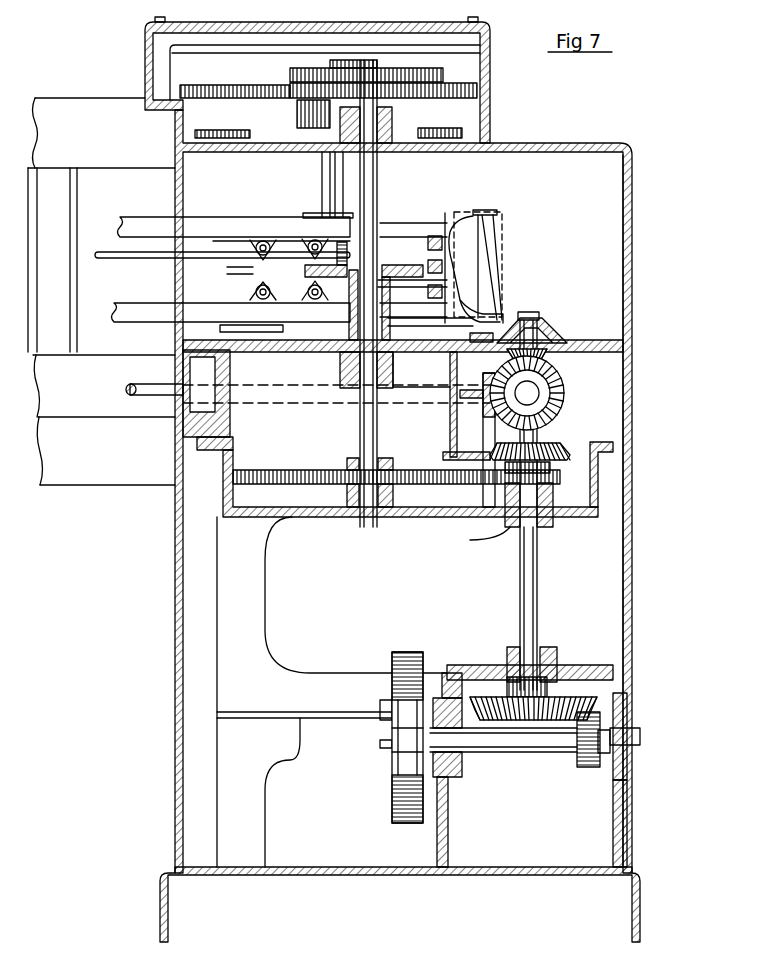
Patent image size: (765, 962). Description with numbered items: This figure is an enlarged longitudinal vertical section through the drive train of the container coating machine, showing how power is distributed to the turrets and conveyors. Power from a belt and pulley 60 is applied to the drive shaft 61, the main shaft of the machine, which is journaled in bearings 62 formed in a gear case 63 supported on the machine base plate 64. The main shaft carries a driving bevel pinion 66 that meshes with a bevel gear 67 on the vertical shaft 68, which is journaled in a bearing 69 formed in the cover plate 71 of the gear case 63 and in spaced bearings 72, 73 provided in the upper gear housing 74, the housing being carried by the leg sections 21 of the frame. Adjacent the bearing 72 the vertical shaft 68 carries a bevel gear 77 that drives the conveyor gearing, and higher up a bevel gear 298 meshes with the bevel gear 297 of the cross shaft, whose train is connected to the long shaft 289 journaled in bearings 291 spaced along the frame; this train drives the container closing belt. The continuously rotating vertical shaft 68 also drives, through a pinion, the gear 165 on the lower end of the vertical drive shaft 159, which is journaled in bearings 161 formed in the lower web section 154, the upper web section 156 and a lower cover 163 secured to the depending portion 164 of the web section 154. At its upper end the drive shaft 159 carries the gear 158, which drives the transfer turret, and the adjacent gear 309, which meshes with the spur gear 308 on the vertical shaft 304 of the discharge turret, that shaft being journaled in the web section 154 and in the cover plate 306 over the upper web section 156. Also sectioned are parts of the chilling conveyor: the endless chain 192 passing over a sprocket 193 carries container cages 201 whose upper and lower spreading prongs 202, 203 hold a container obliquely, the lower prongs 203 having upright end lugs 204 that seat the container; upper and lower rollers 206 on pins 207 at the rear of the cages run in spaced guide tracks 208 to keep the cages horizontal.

The leg sections 21 is at (202, 798).
The belt and pulley 60 is at (404, 826).
The drive shaft 61 is at (535, 742).
The bearings 62 is at (447, 764).
The gear case 63 is at (448, 818).
The machine base plate 64 is at (640, 898).
The driving bevel pinion 66 is at (589, 756).
The bevel gear 67 is at (570, 695).
The vertical shaft 68 is at (530, 579).
The bearing 69 is at (548, 652).
The cover plate 71 is at (481, 665).
The bearing 72 is at (548, 514).
The bearing 73 is at (548, 328).
The upper gear housing 74 is at (633, 366).
The bevel gear 77 is at (556, 447).
The lower web section 154 is at (281, 366).
The upper web section 156 is at (243, 150).
The gear 158 is at (440, 76).
The vertical drive shaft 159 is at (377, 185).
The bearings 161 is at (392, 118).
The lower cover 163 is at (290, 525).
The depending portion 164 is at (226, 438).
The gear 165 is at (418, 483).
The endless chain 192 is at (240, 277).
The sprocket 193 is at (410, 272).
The container cages 201 is at (255, 240).
The upper prongs 202 is at (482, 230).
The lower prongs 203 is at (283, 330).
The end lugs 204 is at (505, 320).
The rollers 206 is at (314, 240).
The pins 207 is at (262, 240).
The guide tracks 208 is at (201, 230).
The shaft 289 is at (156, 397).
The bearings 291 is at (484, 402).
The bevel gear 297 is at (565, 381).
The bevel gear 298 is at (545, 351).
The vertical shaft 304 is at (323, 167).
The cover plate 306 is at (468, 133).
The spur gear 308 is at (207, 96).
The gear 309 is at (442, 92).